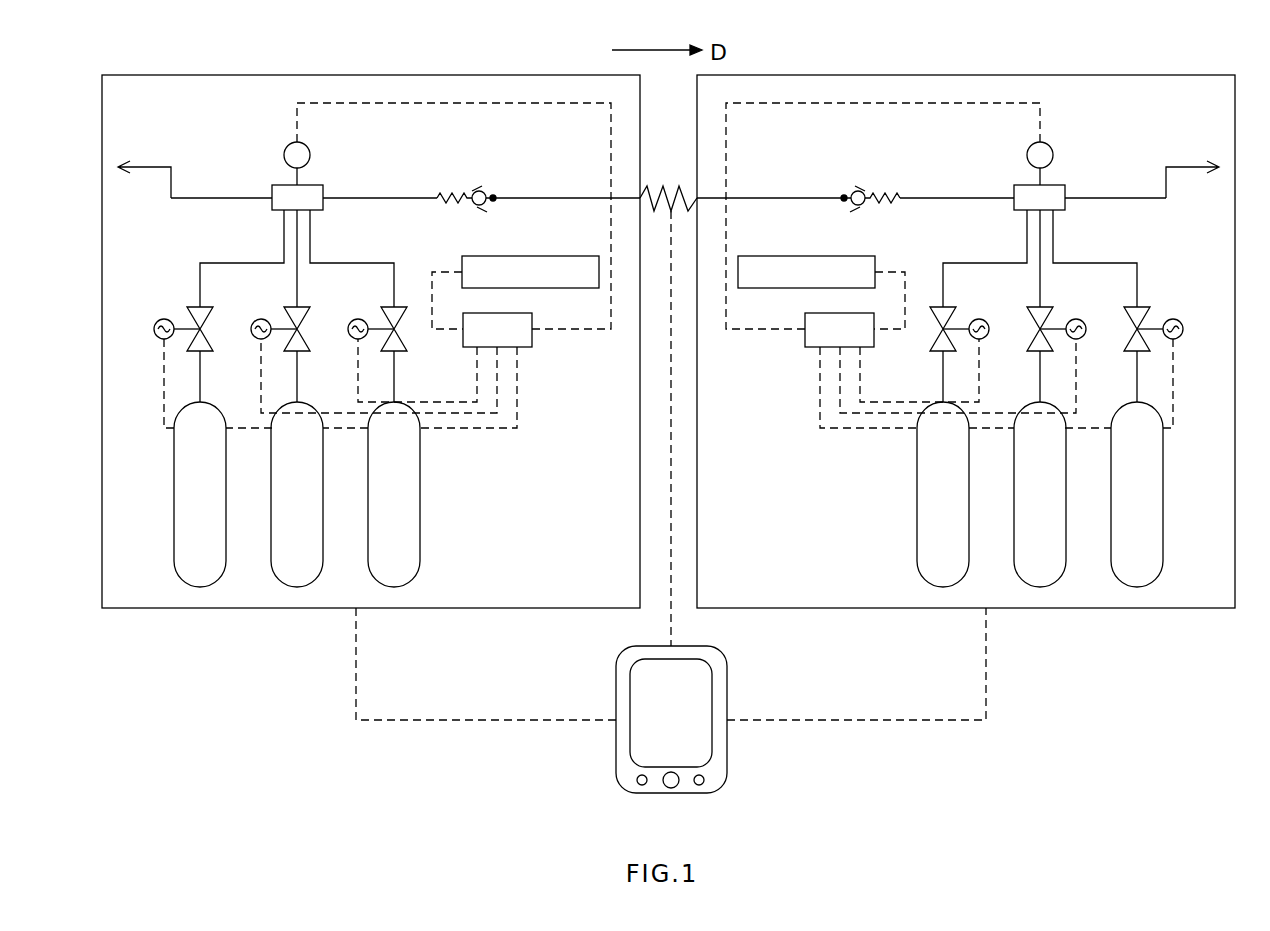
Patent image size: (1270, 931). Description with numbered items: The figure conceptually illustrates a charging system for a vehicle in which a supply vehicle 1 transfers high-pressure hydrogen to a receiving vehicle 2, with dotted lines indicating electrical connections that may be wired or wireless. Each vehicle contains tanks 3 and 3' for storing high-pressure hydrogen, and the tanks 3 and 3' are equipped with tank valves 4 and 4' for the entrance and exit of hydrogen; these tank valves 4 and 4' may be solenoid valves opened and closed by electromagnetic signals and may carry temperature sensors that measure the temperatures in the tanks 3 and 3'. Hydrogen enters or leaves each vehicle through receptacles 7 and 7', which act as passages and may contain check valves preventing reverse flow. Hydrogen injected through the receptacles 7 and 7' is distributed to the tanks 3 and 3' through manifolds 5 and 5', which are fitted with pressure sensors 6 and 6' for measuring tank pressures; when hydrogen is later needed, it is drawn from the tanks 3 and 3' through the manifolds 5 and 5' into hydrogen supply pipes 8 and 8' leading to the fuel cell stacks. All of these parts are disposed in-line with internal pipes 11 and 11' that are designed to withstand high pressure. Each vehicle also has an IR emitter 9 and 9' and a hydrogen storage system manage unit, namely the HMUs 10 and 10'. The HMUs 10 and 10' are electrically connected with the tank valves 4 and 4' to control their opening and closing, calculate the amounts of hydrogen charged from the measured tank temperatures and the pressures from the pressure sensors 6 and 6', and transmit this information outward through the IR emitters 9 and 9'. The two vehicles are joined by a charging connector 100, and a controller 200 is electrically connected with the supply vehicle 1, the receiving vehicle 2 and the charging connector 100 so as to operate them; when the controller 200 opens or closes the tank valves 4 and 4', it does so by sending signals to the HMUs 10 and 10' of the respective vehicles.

The supply vehicle 1 is at (207, 608).
The receiving vehicle 2 is at (1123, 608).
The tank 3 is at (421, 494).
The tank 3' is at (910, 494).
The tank valve 4 is at (183, 304).
The tank valve 4' is at (970, 311).
The manifold 5 is at (289, 168).
The manifold 5' is at (1027, 168).
The pressure sensor 6 is at (324, 163).
The pressure sensor 6' is at (1071, 163).
The receptacle 7 is at (466, 169).
The receptacle 7' is at (870, 169).
The hydrogen supply pipe 8 is at (146, 151).
The hydrogen supply pipe 8' is at (1192, 151).
The IR emitter 9 is at (506, 258).
The IR emitter 9' is at (834, 257).
The hydrogen storage system manage unit (HMU) 10 is at (387, 265).
The hydrogen storage system manage unit (HMU) 10' is at (949, 265).
The internal pipe 11 is at (405, 300).
The internal pipe 11' is at (931, 300).
The charging connector 100 is at (663, 187).
The controller 200 is at (727, 770).